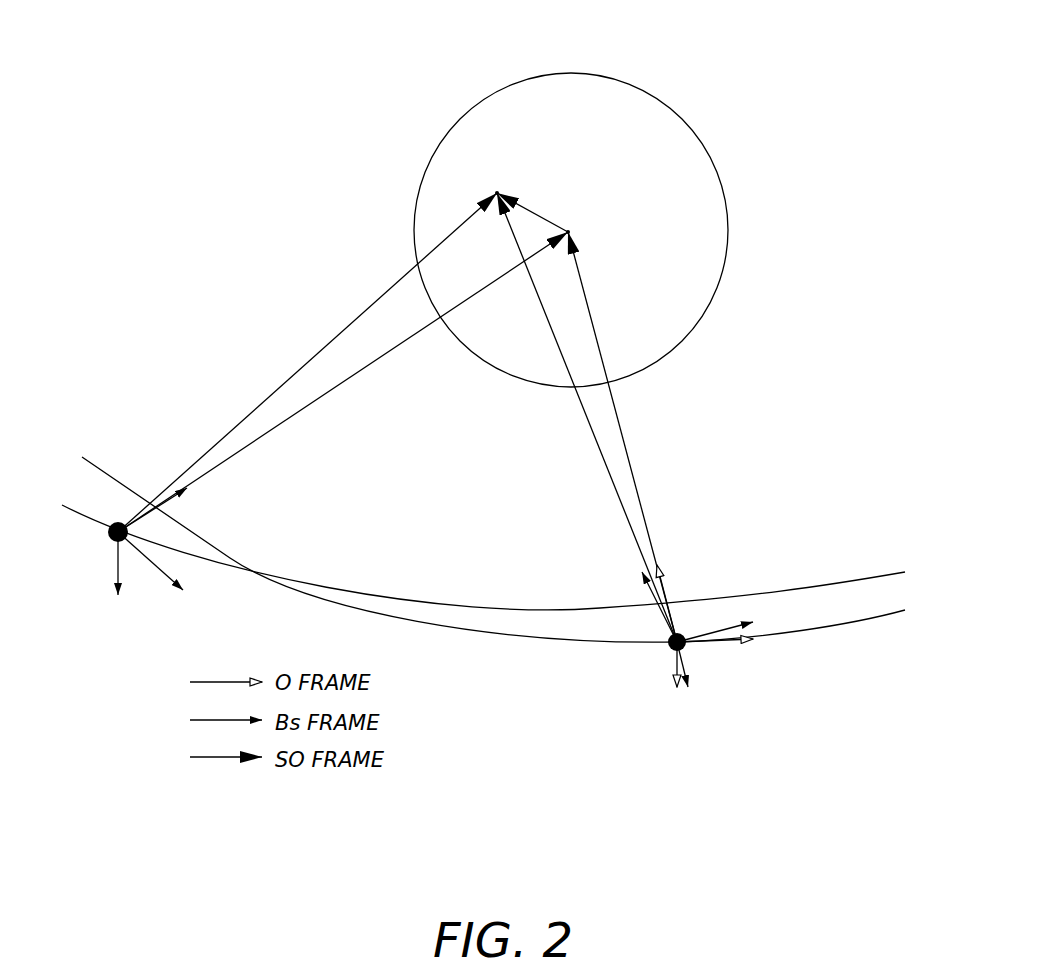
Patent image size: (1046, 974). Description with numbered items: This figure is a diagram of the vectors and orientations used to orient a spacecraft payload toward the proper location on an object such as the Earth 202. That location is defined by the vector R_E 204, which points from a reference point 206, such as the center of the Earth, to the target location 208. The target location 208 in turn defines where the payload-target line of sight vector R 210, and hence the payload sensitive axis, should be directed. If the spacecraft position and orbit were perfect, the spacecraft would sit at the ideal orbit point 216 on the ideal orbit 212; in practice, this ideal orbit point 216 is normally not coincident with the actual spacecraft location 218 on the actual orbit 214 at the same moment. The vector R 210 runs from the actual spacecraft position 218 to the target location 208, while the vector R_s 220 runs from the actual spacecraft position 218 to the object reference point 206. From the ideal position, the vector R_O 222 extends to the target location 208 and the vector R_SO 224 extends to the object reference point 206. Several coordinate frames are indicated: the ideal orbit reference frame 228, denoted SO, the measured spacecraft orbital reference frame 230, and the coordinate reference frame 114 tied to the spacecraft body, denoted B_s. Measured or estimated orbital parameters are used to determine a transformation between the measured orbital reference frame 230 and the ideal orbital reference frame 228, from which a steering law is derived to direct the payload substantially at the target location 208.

The Earth 202 is at (728, 218).
The vector R_E 204 is at (542, 215).
The reference point 206 is at (570, 228).
The target location 208 is at (497, 190).
The payload-target line of sight vector R 210 is at (585, 420).
The ideal orbit 212 is at (82, 510).
The actual orbit 214 is at (120, 483).
The ideal orbit point 216 is at (107, 536).
The spacecraft location 218 is at (668, 647).
The vector R_s 220 is at (638, 493).
The vector R_O 222 is at (300, 368).
The vector R_SO 224 is at (302, 412).
The ideal orbit reference frame 228 is at (150, 567).
The measured spacecraft orbital reference frame 230 is at (678, 663).
The spacecraft body coordinate reference frame 114 is at (717, 634).